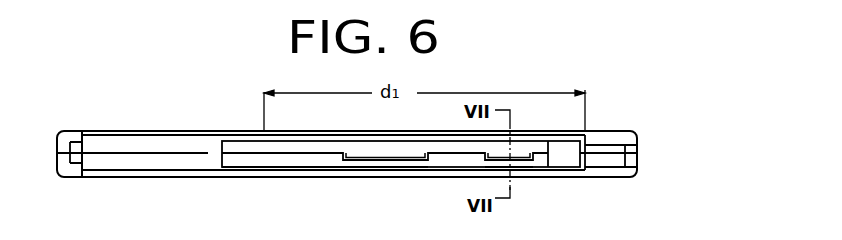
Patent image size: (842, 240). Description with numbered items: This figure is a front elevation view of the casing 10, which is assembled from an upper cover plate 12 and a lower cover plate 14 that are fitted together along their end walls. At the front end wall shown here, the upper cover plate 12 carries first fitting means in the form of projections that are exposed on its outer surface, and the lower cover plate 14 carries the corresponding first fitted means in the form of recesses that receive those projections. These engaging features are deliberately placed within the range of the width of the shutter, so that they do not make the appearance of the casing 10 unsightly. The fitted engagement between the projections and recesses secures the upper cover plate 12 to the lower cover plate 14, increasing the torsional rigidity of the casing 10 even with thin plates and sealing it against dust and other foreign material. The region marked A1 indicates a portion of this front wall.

The casing 10 is at (646, 124).
The upper cover plate 12 is at (609, 130).
The lower cover plate 14 is at (606, 173).
The region A1 is at (288, 163).